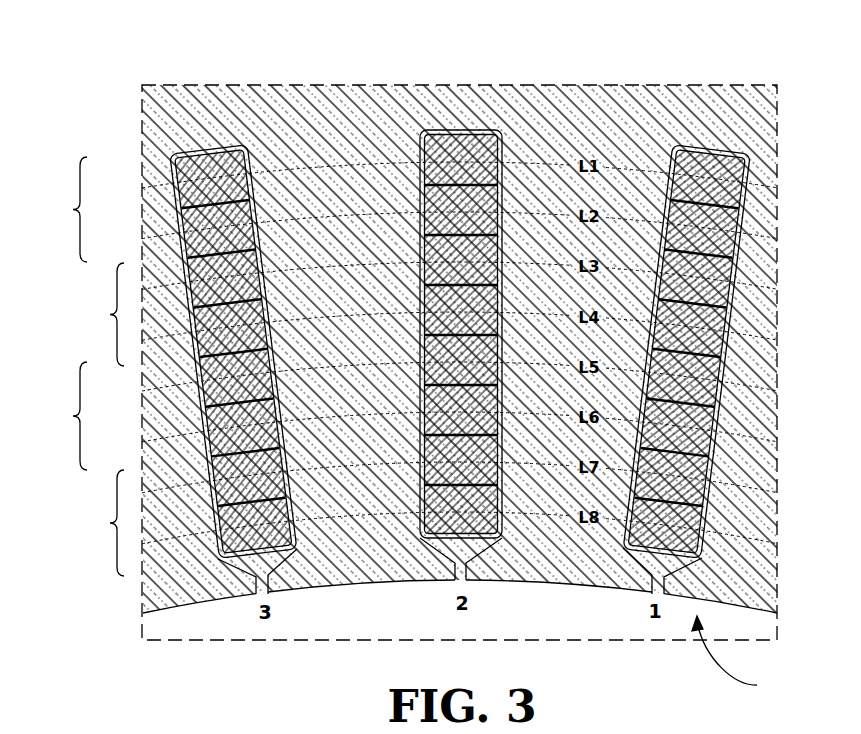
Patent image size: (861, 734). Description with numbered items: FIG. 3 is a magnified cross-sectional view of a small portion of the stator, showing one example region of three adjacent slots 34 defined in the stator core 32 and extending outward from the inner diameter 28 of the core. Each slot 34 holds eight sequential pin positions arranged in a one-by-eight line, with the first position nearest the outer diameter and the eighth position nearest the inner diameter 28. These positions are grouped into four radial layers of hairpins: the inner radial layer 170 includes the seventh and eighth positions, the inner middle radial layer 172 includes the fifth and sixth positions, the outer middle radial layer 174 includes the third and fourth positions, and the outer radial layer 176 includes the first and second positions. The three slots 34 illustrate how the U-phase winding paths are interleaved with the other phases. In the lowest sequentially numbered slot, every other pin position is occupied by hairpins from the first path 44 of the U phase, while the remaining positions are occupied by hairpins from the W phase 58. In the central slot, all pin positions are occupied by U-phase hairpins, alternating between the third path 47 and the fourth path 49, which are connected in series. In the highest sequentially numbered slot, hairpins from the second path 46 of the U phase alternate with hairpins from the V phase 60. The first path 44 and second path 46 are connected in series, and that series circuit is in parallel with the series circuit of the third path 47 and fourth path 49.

The inner diameter 28 is at (513, 583).
The stator core 32 is at (515, 92).
The slots 34 is at (742, 658).
The first path 44 is at (740, 206).
The second path 46 is at (180, 165).
The third path 47 is at (420, 198).
The fourth path 49 is at (420, 140).
The W phase 58 is at (750, 152).
The V phase 60 is at (200, 200).
The inner radial layer 170 is at (95, 523).
The inner middle radial layer 172 is at (57, 416).
The outer middle radial layer 174 is at (95, 314).
The outer radial layer 176 is at (57, 209).